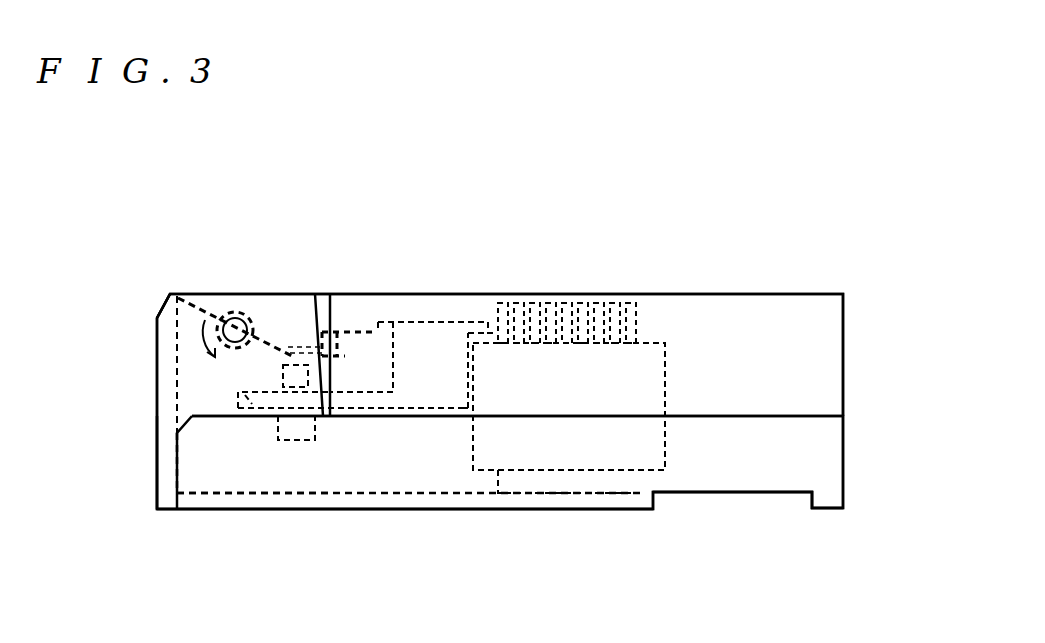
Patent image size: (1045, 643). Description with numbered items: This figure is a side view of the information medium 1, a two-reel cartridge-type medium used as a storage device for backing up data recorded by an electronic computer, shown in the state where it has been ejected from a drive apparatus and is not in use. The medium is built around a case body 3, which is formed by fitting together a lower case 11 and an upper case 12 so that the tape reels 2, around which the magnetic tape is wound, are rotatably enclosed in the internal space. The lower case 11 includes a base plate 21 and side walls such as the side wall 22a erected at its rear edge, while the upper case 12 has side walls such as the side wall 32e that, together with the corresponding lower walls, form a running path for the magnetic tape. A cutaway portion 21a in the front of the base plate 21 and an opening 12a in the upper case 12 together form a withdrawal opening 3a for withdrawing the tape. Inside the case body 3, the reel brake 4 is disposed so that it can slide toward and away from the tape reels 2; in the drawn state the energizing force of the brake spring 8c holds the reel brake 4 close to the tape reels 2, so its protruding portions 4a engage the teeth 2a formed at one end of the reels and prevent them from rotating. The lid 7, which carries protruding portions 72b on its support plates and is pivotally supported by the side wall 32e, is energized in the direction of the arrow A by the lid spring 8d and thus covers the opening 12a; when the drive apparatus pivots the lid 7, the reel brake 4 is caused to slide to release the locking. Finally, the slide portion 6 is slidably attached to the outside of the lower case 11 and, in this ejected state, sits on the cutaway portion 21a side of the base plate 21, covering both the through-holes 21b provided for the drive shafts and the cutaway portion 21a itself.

The information medium 1 is at (571, 265).
The tape reel 2 is at (665, 385).
The teeth 2a is at (645, 322).
The case body 3 is at (862, 400).
The withdrawal opening 3a is at (165, 420).
The reel brake 4 is at (437, 420).
The protruding portions 4a is at (488, 315).
The slide portion 6 is at (388, 500).
The lid 7 is at (167, 337).
The brake spring 8c is at (368, 323).
The lid spring 8d is at (240, 305).
The lower case 11 is at (862, 446).
The upper case 12 is at (848, 345).
The opening 12a is at (186, 388).
The base plate 21 is at (533, 500).
The cutaway portion 21a is at (222, 500).
The through-holes 21b is at (577, 500).
The side wall 22a is at (838, 478).
The side wall 32e is at (326, 300).
The protruding portions 72b is at (284, 371).
The arrow A is at (197, 338).